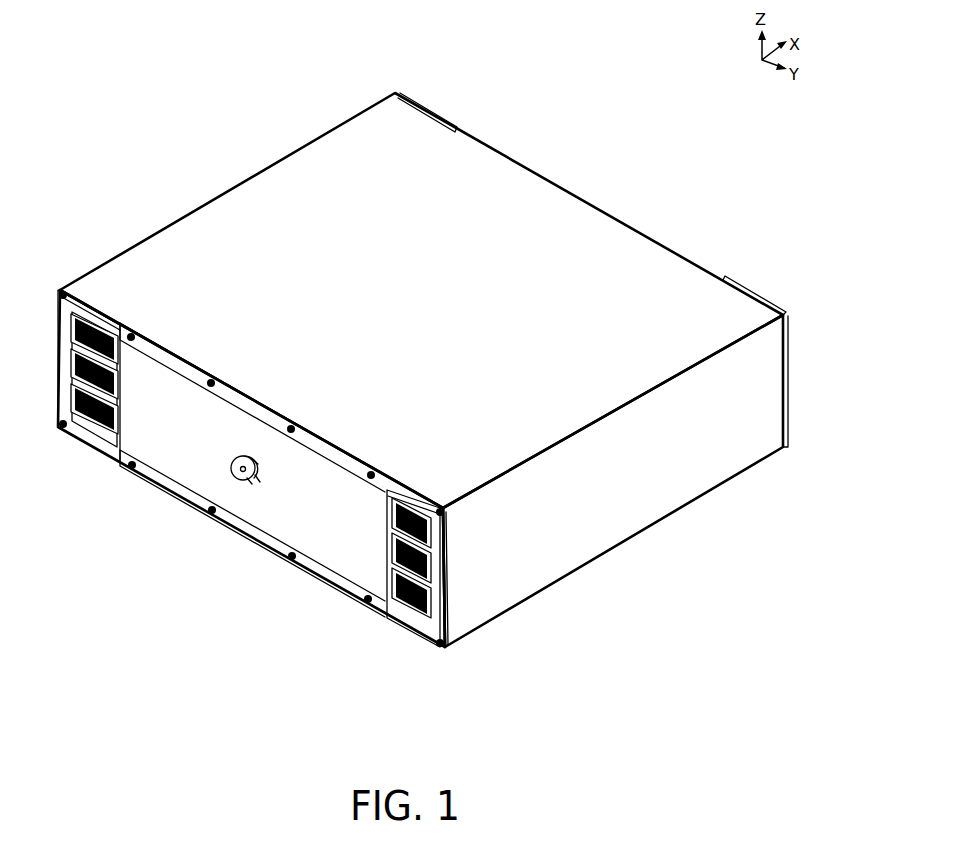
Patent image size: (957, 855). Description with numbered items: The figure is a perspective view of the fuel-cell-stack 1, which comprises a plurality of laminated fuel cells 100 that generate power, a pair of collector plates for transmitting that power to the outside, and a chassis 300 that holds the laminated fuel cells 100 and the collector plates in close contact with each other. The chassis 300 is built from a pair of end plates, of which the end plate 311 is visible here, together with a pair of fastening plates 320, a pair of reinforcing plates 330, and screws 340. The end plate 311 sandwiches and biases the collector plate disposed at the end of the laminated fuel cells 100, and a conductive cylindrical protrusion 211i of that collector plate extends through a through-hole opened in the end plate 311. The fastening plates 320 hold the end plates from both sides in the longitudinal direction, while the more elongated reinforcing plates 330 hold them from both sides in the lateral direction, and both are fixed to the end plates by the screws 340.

The fuel-cell-stack 1 is at (415, 360).
The fuel cells 100 is at (96, 424).
The protrusion 211i is at (237, 482).
The chassis 300 is at (685, 547).
The end plate 311 is at (170, 460).
The fastening plate 320 is at (680, 270).
The reinforcing plate 330 is at (602, 543).
The screws 340 is at (362, 602).